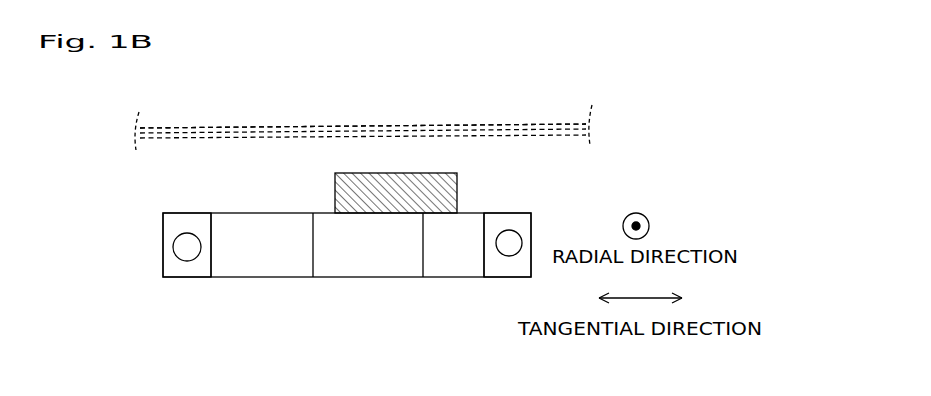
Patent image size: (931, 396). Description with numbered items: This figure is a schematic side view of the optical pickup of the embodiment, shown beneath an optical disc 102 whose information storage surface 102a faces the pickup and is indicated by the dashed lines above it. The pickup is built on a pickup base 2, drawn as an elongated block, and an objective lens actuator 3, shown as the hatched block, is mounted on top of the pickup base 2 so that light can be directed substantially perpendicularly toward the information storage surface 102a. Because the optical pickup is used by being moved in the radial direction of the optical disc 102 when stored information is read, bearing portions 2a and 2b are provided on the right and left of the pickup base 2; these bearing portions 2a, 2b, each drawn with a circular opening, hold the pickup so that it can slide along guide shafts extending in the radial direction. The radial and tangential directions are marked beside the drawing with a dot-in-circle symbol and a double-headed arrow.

The pickup base 2 is at (264, 279).
The bearing portion 2a is at (166, 216).
The bearing portion 2b is at (528, 222).
The objective lens actuator 3 is at (459, 182).
The optical disc 102 is at (360, 127).
The information storage surface 102a is at (208, 127).